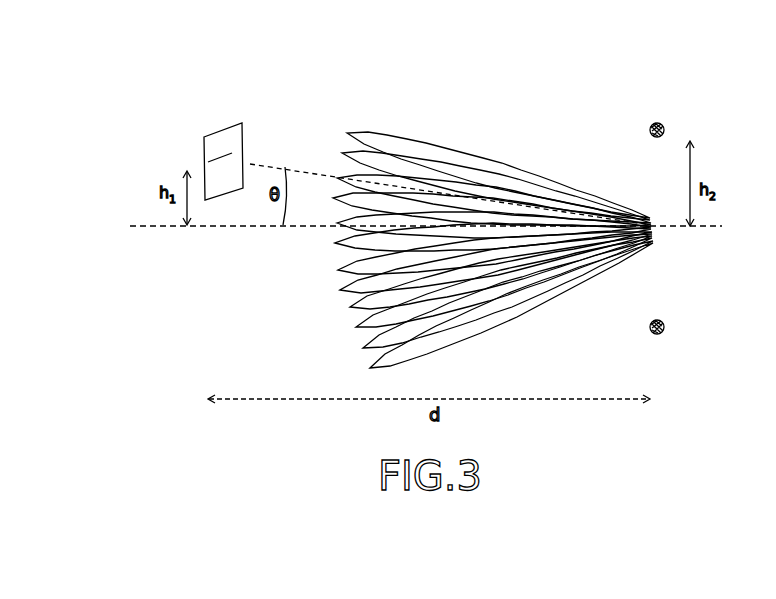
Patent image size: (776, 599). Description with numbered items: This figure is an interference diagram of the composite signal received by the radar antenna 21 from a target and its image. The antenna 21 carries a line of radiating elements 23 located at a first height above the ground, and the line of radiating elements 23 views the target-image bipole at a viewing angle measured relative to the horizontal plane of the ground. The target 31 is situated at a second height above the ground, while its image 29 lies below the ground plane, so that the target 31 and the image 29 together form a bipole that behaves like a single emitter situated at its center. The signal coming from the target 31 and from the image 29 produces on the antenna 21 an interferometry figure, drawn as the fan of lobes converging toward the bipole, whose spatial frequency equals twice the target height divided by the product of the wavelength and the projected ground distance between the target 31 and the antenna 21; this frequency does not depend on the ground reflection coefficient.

The radar antenna 21 is at (224, 130).
The line of radiating elements 23 is at (232, 153).
The target 31 is at (657, 123).
The image 29 is at (659, 334).